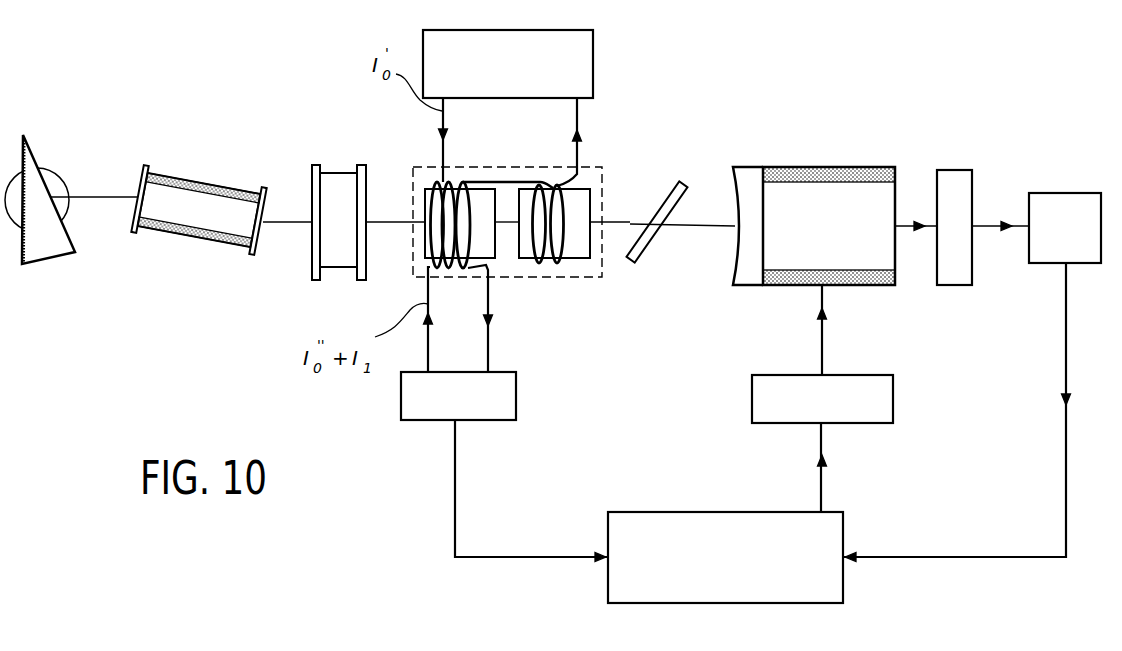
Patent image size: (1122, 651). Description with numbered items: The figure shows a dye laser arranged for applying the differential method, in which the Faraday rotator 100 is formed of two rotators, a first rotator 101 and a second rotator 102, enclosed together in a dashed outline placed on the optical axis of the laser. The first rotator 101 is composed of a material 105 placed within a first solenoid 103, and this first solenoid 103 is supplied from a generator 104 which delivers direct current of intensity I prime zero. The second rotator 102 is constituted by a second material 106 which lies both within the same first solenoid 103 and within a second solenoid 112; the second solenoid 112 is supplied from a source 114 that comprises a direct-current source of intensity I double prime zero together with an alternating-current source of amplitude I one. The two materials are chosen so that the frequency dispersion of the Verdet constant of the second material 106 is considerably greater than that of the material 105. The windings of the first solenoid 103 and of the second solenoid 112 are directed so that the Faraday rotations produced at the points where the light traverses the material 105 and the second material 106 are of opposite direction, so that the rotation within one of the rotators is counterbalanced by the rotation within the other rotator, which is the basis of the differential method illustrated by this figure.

The Faraday rotator 100 is at (612, 167).
The first rotator 101 is at (584, 268).
The second rotator 102 is at (498, 265).
The first solenoid 103 is at (510, 169).
The generator 104 is at (520, 73).
The material of first rotator 105 is at (578, 241).
The second material 106 is at (483, 247).
The second solenoid 112 is at (462, 178).
The source 114 is at (470, 403).